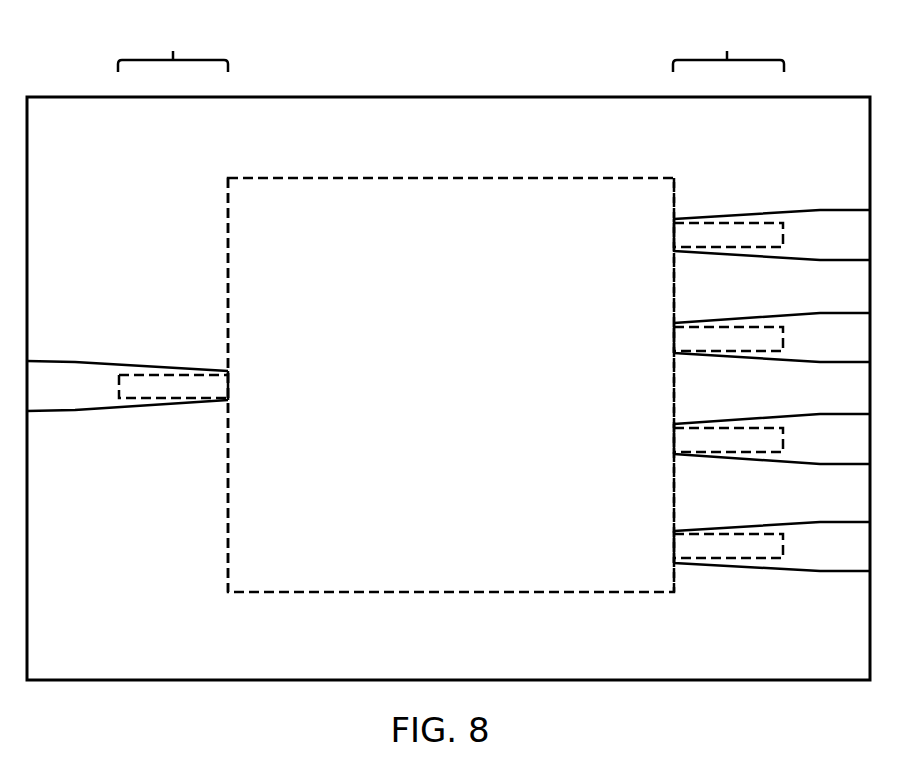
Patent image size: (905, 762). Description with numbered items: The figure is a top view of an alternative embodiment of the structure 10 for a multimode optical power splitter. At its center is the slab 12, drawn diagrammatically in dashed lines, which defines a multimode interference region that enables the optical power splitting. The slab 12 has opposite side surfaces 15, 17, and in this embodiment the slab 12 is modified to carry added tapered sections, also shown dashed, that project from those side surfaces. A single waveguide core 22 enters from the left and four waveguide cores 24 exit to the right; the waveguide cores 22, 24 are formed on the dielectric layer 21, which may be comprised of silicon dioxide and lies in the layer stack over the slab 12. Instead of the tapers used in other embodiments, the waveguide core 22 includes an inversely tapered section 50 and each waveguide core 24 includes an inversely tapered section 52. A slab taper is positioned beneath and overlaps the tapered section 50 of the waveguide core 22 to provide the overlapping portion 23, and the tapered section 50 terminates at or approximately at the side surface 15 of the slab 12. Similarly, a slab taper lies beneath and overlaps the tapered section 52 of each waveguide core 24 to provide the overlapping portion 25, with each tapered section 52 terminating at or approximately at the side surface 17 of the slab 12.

The structure 10 is at (389, 389).
The slab 12 is at (437, 547).
The side surface 15 is at (228, 493).
The side surface 17 is at (674, 492).
The dielectric layer 21 is at (95, 637).
The waveguide core 22 is at (127, 362).
The portion 23 is at (173, 46).
The waveguide cores 24 is at (772, 364).
The portion 25 is at (728, 46).
The tapered section 50 is at (103, 390).
The tapered section 52 is at (798, 238).